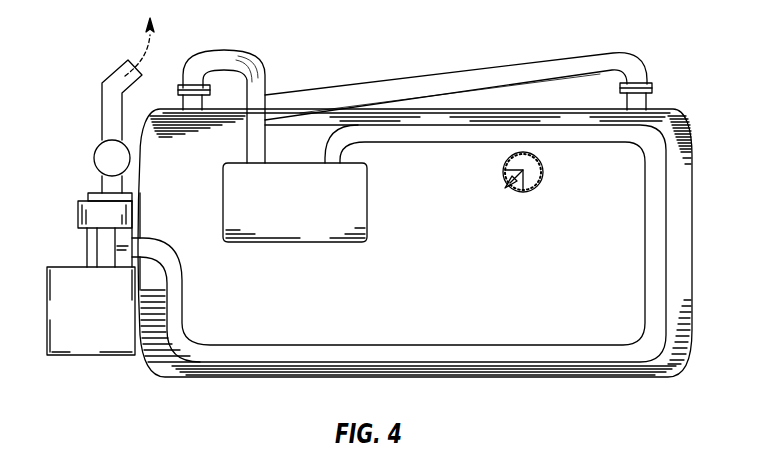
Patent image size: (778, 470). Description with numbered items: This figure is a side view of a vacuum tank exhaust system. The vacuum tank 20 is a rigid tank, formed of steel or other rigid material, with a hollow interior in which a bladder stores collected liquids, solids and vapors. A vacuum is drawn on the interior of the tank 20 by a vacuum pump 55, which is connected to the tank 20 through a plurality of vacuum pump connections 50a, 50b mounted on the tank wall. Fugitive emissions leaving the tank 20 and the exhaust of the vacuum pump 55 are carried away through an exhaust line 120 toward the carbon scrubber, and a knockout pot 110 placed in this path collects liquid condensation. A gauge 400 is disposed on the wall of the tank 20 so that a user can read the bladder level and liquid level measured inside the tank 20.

The vacuum tank 20 is at (412, 378).
The vacuum pump 55 is at (102, 323).
The knockout pot 110 is at (314, 213).
The exhaust line 120 is at (102, 118).
The vacuum pump connection 50a is at (178, 90).
The vacuum pump connection 50b is at (653, 90).
The gauge 400 is at (503, 172).